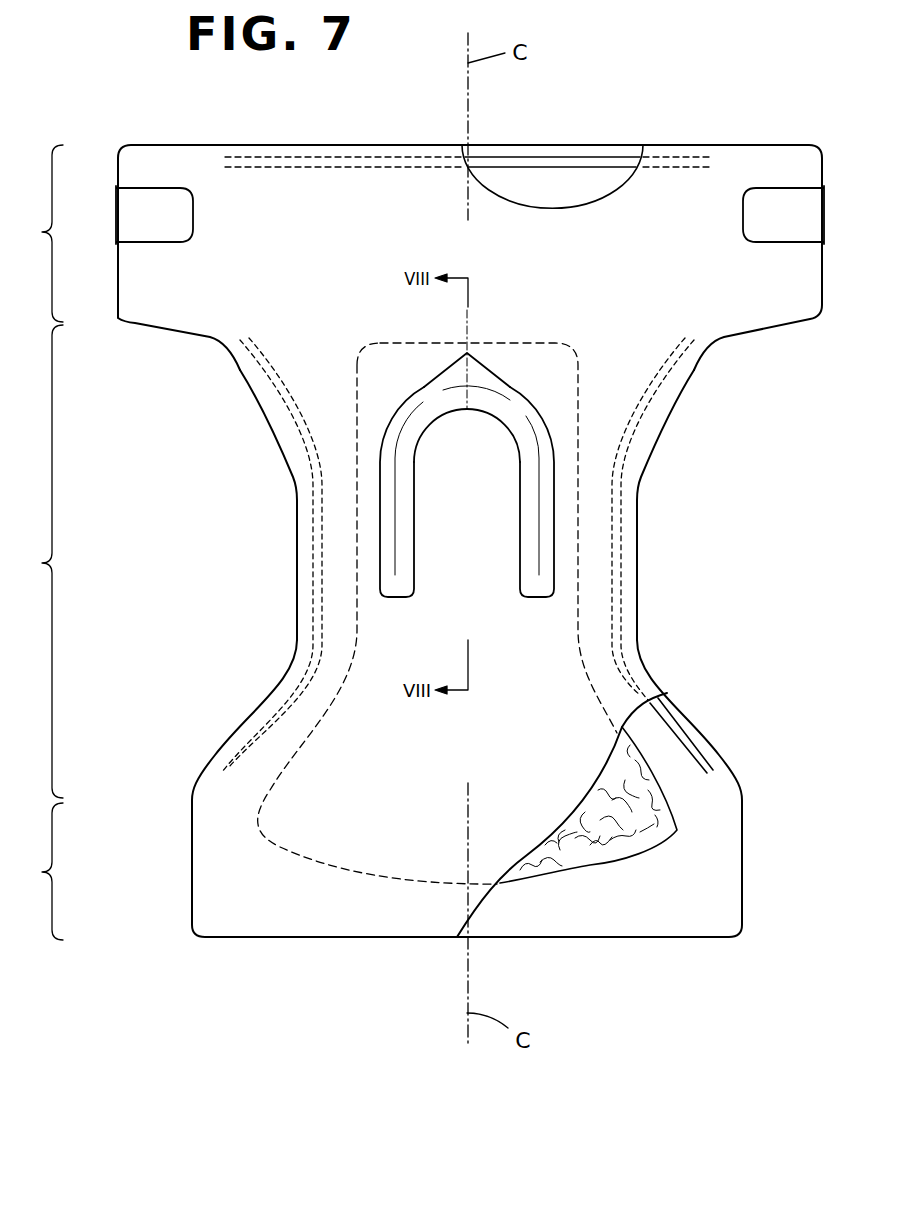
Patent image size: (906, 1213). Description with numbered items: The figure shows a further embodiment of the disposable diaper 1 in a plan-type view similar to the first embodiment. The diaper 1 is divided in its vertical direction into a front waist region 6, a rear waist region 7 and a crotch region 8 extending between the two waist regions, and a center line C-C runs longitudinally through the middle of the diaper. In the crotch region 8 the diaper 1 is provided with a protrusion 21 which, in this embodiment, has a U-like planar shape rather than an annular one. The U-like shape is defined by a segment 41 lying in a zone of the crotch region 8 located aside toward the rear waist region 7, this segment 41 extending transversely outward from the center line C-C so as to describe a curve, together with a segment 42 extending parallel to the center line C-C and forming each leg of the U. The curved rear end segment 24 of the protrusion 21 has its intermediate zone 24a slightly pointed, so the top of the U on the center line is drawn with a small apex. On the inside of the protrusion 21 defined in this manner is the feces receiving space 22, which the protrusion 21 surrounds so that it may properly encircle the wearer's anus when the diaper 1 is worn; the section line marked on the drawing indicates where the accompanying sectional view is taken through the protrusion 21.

The disposable diaper 1 is at (421, 499).
The front waist region 6 is at (380, 790).
The rear waist region 7 is at (421, 257).
The crotch region 8 is at (365, 604).
The protrusion 21 is at (487, 336).
The feces receiving space 22 is at (480, 438).
The rear end segment 24 is at (508, 390).
The intermediate zone 24a is at (471, 375).
The segment 41 is at (437, 383).
The segment 42 is at (410, 513).